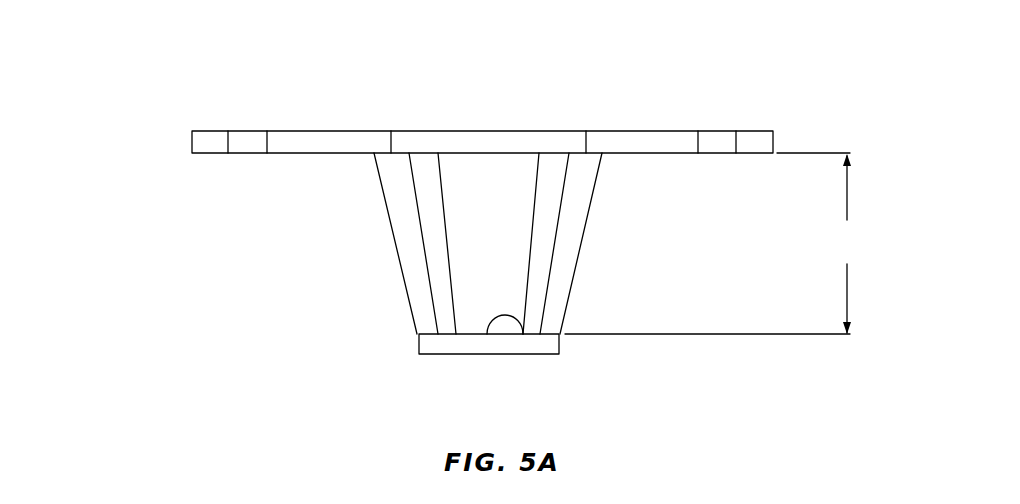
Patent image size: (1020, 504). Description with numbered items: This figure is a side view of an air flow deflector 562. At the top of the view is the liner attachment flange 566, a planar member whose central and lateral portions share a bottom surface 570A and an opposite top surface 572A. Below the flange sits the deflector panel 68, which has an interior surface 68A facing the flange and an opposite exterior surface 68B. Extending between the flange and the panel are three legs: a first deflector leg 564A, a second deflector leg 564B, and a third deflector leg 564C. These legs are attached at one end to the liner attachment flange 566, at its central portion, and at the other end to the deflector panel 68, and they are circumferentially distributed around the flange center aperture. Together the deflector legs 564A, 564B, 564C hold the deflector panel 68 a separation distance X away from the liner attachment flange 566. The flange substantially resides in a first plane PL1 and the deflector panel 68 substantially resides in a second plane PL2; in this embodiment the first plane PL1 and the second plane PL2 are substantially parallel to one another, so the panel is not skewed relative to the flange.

The liner attachment flange 566 is at (464, 224).
The top surface 572A is at (322, 131).
The bottom surface 570A is at (322, 153).
The air flow deflector 562 is at (276, 282).
The first deflector leg 564A is at (472, 176).
The second deflector leg 564B is at (568, 240).
The third deflector leg 564C is at (417, 292).
The deflector panel 68 is at (496, 369).
The interior surface 68A is at (518, 323).
The exterior surface 68B is at (465, 355).
The first plane PL1 is at (818, 152).
The second plane PL2 is at (817, 336).
The separation distance X is at (847, 244).